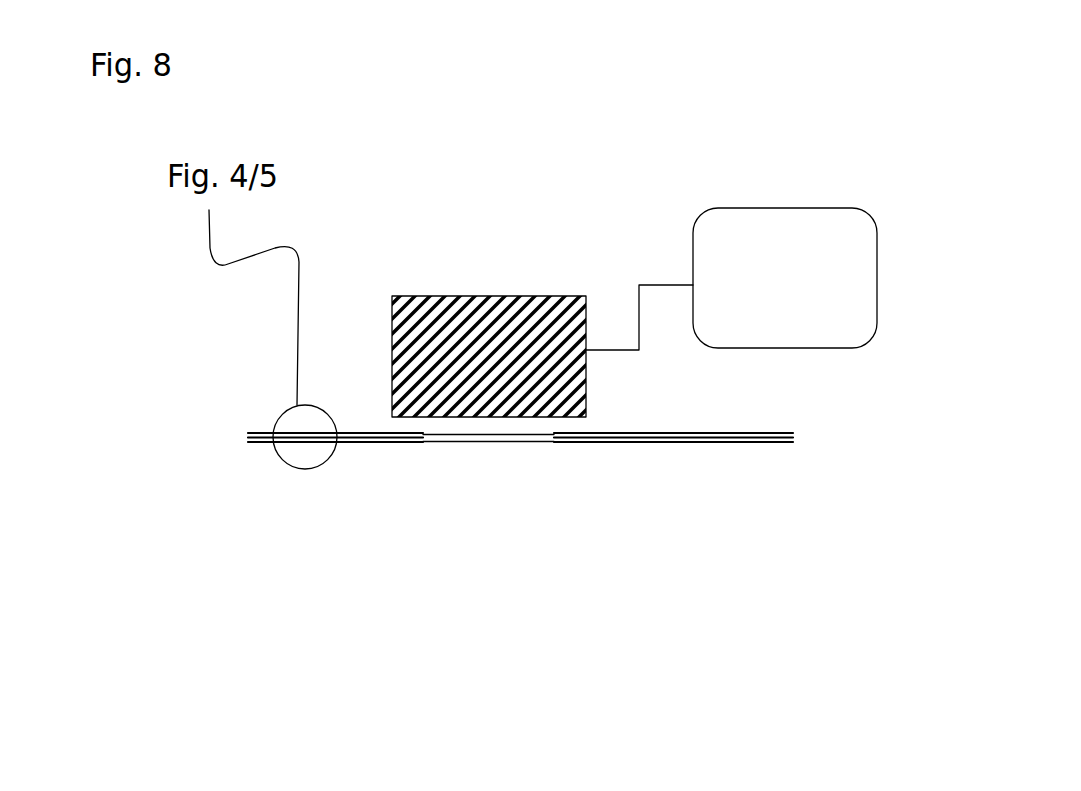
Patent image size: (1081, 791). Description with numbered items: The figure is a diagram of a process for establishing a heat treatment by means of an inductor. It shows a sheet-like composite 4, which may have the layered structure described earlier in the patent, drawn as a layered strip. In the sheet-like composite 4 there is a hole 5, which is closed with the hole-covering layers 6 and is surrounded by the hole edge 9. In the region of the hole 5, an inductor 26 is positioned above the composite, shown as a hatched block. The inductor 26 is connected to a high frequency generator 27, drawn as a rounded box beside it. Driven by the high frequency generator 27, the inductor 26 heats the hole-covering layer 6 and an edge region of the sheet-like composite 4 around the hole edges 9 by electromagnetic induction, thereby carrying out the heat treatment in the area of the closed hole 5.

The sheet-like composite 4 is at (673, 448).
The hole 5 is at (533, 505).
The hole-covering layer 6 is at (455, 444).
The hole edge 9 is at (425, 444).
The inductor 26 is at (485, 296).
The high frequency generator 27 is at (877, 278).